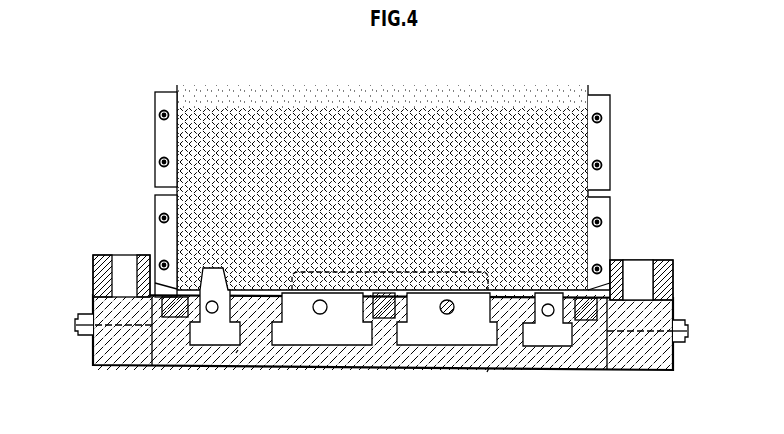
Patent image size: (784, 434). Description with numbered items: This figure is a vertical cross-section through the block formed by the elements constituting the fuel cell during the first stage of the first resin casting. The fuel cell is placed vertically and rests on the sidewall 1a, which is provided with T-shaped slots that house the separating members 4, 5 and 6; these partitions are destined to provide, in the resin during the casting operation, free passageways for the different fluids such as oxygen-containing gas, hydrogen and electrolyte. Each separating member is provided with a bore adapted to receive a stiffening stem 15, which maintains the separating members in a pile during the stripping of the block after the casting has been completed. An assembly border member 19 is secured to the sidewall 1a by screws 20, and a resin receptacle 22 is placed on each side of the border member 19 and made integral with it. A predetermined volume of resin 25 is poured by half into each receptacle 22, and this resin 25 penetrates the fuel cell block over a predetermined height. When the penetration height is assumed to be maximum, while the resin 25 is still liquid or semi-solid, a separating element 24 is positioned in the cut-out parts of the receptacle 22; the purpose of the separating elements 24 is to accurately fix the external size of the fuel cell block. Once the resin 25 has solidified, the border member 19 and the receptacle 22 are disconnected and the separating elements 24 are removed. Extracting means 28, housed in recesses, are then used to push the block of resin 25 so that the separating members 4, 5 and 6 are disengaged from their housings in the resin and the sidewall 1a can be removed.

The sidewall 1a is at (452, 357).
The separating member 4 is at (545, 340).
The separating member 5 is at (206, 345).
The separating member 6 is at (316, 333).
The stiffening stem 15 is at (236, 353).
The assembly border member 19 is at (92, 362).
The screw 20 is at (82, 308).
The resin receptacle 22 is at (92, 254).
The separating element 24 is at (140, 256).
The resin 25 is at (636, 280).
The extracting means 28 is at (172, 318).